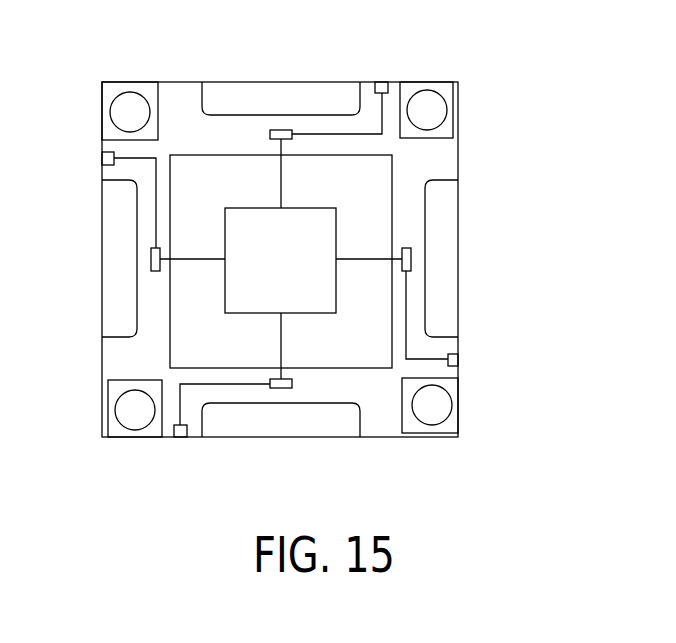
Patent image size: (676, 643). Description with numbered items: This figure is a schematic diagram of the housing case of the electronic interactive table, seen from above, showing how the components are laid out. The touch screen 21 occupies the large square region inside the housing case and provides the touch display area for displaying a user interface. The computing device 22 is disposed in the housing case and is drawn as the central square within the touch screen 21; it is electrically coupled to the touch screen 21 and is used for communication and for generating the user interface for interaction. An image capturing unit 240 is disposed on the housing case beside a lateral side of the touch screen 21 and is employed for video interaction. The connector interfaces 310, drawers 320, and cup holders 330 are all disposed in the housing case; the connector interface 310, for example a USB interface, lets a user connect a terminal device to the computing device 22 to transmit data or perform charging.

The touch screen 21 is at (370, 199).
The computing device 22 is at (322, 242).
The image capturing unit 240 is at (275, 130).
The connector interface 310 is at (382, 82).
The drawer 320 is at (299, 430).
The cup holder 330 is at (455, 412).